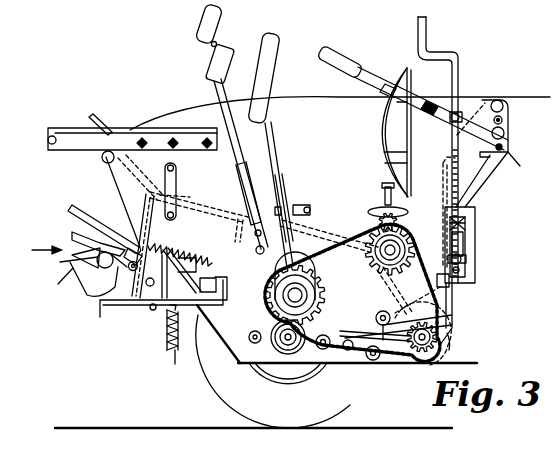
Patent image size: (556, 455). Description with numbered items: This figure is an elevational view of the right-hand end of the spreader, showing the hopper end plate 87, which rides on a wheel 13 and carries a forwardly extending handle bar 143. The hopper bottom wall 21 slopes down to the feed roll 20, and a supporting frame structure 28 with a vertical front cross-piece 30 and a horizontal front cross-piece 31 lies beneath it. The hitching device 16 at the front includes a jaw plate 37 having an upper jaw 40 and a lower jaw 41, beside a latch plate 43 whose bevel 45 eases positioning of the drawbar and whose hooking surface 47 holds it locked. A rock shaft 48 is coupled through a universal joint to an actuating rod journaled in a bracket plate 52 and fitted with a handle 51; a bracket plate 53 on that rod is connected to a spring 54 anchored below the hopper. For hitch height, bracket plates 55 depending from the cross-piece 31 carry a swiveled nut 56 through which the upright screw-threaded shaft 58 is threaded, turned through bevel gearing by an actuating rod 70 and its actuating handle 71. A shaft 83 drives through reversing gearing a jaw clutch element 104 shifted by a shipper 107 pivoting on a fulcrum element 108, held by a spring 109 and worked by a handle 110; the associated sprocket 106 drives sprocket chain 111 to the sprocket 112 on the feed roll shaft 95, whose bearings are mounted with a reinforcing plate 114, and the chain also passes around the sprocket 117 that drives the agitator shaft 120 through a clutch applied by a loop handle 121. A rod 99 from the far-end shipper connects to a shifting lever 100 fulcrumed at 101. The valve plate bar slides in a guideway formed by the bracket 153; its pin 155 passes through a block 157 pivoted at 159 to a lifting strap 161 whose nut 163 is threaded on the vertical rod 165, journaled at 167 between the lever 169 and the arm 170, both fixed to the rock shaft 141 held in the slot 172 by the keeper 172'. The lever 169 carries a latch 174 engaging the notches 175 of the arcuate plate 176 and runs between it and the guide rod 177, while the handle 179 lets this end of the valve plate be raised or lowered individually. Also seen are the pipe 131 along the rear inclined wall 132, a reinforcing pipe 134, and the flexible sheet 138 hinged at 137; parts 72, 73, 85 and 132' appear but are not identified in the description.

The wheel 13 is at (222, 382).
The hitching device 16 is at (37, 243).
The feed roll 20 is at (432, 365).
The bottom wall 21 is at (215, 204).
The supporting frame structure 28 is at (191, 275).
The vertical front cross-piece 30 is at (189, 268).
The horizontal front cross-piece 31 is at (206, 280).
The jaw plate 37 is at (68, 263).
The upper jaw 40 is at (85, 237).
The lower jaw 41 is at (60, 282).
The latch plate 43 is at (88, 292).
The bevel 45 is at (90, 258).
The hooking surface 47 is at (122, 275).
The rock shaft 48 is at (110, 306).
The handle 51 is at (80, 212).
The bracket plate 52 is at (132, 222).
The bracket plate 53 is at (130, 250).
The spring 54 is at (196, 256).
The bracket plates 55 is at (174, 335).
The nut 56 is at (218, 333).
The screw-threaded shaft 58 is at (175, 356).
The actuating rod 70 is at (173, 219).
The actuating handle 71 is at (182, 196).
The push rod 72 is at (138, 308).
The pin 73 is at (153, 310).
The shaft 83 is at (288, 345).
The hub flange 85 is at (275, 352).
The hopper end plate 87 is at (303, 115).
The feed roll shaft 95 is at (412, 358).
The rod 99 is at (284, 273).
The shifting lever 100 is at (225, 96).
The fulcrum 101 is at (248, 190).
The jaw clutch element 104 is at (283, 300).
The sprocket 106 is at (376, 318).
The shipper 107 is at (308, 236).
The fulcrum element 108 is at (280, 206).
The spring 109 is at (305, 205).
The handle 110 is at (268, 63).
The sprocket chain 111 is at (322, 350).
The sprocket 112 is at (440, 330).
The reinforcing plate 114 is at (362, 356).
The sprocket 117 is at (398, 285).
The agitator shaft 120 is at (373, 264).
The loop handle 121 is at (378, 212).
The pipe 131 is at (505, 109).
The rear inclined wall 132 is at (432, 206).
The cable 132' is at (427, 215).
The reinforcing pipe 134 is at (102, 157).
The hinge 137 is at (178, 177).
The sheet of flexible material 138 is at (101, 118).
The rock shaft 141 is at (504, 123).
The handle bar 143 is at (66, 138).
The bracket 153 is at (471, 228).
The pin 155 is at (450, 275).
The block 157 is at (459, 268).
The pivot 159 is at (466, 259).
The lifting strap 161 is at (449, 243).
The nut 163 is at (470, 201).
The vertical rod 165 is at (480, 172).
The journal bearing 167 is at (484, 102).
The lever 169 is at (367, 80).
The arm 170 is at (434, 100).
The slot 172 is at (520, 144).
The keeper 172' is at (528, 177).
The latch 174 is at (388, 85).
The notches 175 is at (389, 126).
The arcuate plate 176 is at (385, 138).
The guide rod 177 is at (386, 154).
The handle 179 is at (428, 27).